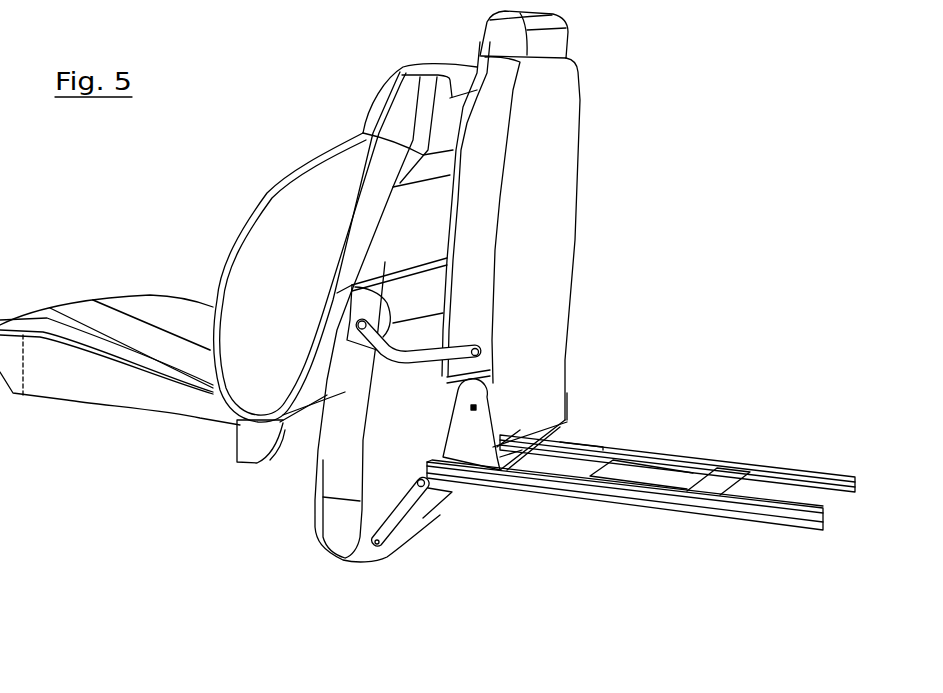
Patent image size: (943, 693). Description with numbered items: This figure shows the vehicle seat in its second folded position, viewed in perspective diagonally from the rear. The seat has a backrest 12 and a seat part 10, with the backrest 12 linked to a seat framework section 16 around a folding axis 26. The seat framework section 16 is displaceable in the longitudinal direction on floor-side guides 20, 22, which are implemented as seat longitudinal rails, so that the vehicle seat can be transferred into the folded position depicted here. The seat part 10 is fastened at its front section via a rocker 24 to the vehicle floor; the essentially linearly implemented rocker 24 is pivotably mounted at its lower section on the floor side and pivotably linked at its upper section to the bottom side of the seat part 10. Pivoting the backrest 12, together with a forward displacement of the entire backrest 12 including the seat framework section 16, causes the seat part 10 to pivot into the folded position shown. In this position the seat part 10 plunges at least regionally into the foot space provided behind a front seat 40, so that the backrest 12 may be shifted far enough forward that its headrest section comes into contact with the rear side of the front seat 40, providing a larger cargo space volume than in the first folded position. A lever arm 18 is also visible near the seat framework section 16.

The seat part 10 is at (352, 540).
The backrest 12 is at (555, 200).
The seat framework section 16 is at (483, 432).
The lever arm 18 is at (455, 353).
The floor-side guide 20 is at (565, 487).
The floor-side guide 22 is at (752, 470).
The rocker 24 is at (388, 525).
The folding axis 26 is at (476, 407).
The front seat 40 is at (125, 400).